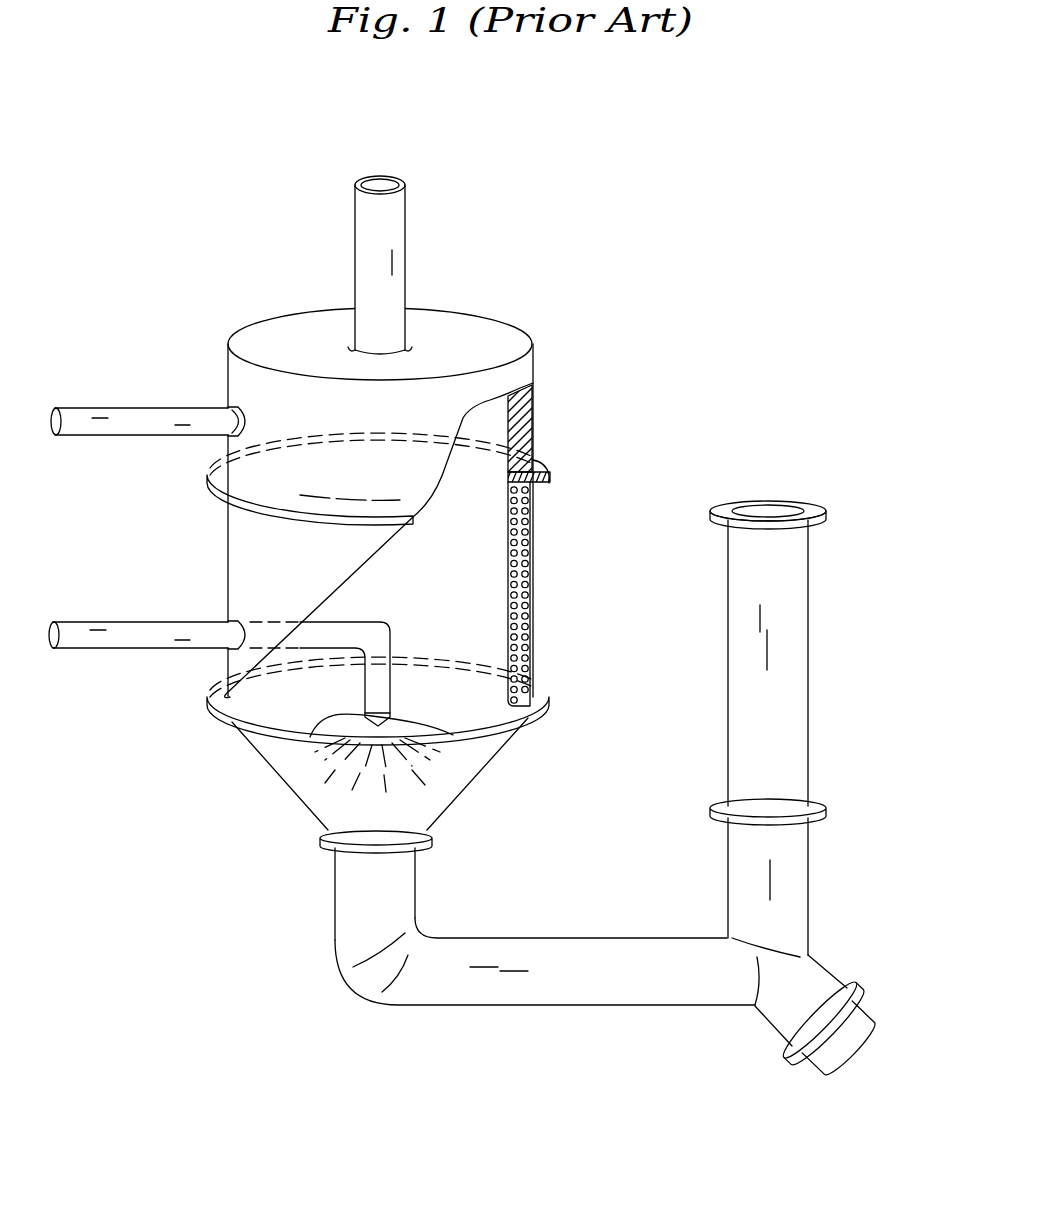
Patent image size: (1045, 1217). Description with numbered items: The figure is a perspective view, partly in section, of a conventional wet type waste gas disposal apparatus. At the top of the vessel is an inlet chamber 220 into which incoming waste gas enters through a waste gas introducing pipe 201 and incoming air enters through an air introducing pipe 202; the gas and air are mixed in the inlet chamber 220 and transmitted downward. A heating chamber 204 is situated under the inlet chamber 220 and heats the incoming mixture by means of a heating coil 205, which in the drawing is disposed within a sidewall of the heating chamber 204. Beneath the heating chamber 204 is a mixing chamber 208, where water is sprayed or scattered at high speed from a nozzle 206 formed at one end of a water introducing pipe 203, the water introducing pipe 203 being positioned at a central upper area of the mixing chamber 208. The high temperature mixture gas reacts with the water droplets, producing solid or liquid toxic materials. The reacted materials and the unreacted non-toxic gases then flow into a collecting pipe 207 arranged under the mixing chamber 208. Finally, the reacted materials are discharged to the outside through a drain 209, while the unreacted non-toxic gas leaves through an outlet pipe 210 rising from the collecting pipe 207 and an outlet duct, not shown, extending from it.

The waste gas introducing pipe 201 is at (389, 212).
The air introducing pipe 202 is at (136, 415).
The water introducing pipe 203 is at (132, 625).
The heating chamber 204 is at (557, 594).
The heating coil 205 is at (522, 553).
The nozzle 206 is at (362, 716).
The collecting pipe 207 is at (583, 945).
The mixing chamber 208 is at (466, 780).
The drain 209 is at (863, 1017).
The outlet pipe 210 is at (798, 683).
The inlet chamber 220 is at (535, 420).